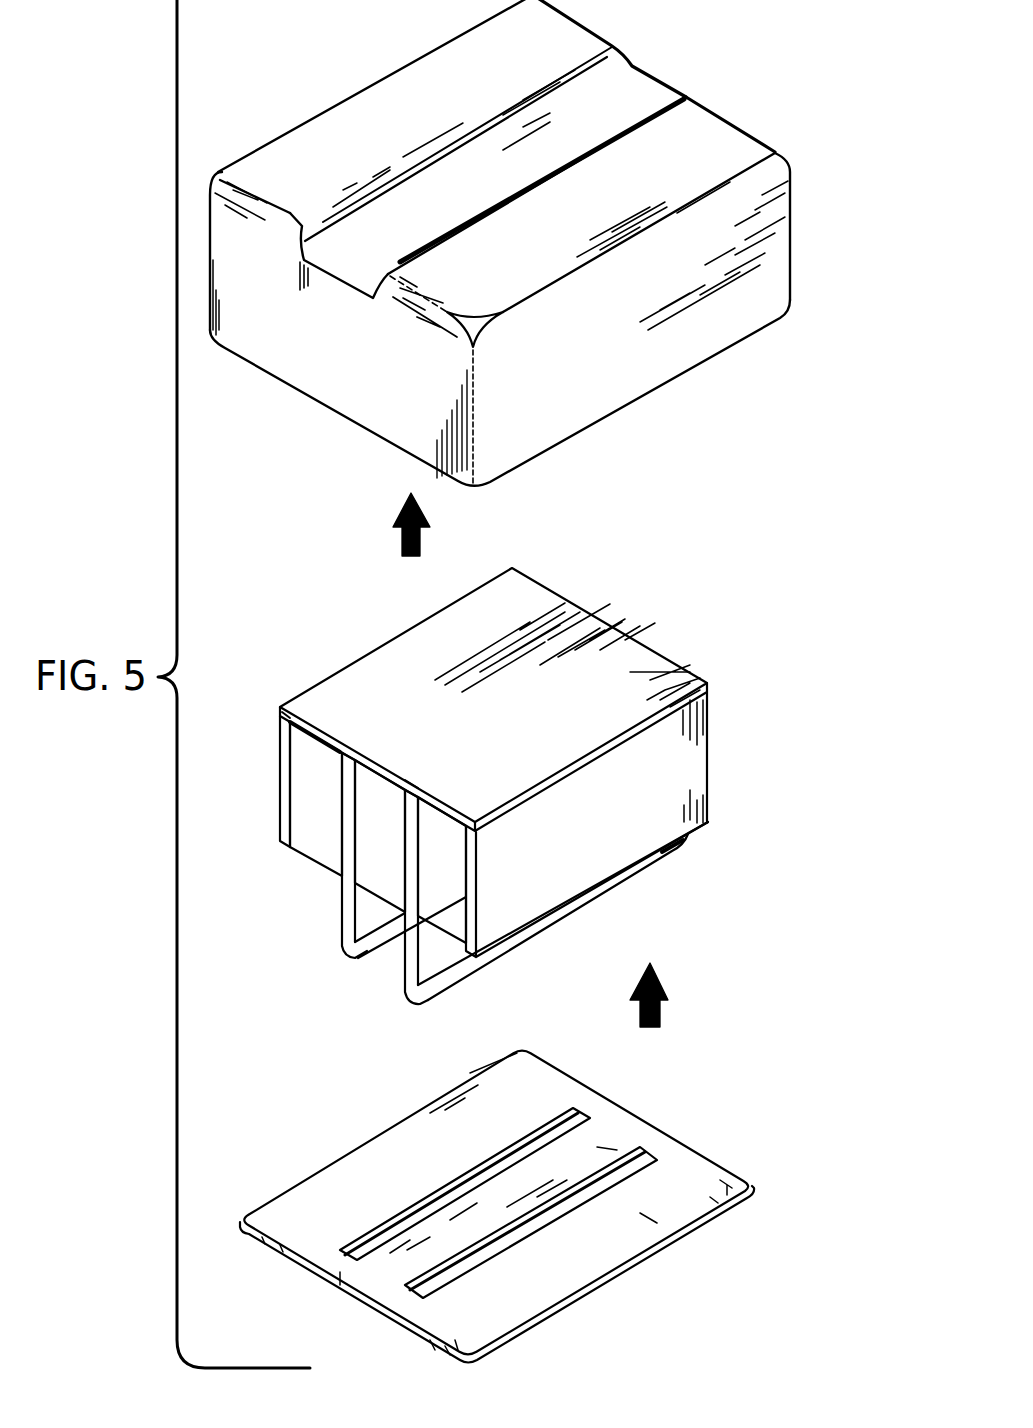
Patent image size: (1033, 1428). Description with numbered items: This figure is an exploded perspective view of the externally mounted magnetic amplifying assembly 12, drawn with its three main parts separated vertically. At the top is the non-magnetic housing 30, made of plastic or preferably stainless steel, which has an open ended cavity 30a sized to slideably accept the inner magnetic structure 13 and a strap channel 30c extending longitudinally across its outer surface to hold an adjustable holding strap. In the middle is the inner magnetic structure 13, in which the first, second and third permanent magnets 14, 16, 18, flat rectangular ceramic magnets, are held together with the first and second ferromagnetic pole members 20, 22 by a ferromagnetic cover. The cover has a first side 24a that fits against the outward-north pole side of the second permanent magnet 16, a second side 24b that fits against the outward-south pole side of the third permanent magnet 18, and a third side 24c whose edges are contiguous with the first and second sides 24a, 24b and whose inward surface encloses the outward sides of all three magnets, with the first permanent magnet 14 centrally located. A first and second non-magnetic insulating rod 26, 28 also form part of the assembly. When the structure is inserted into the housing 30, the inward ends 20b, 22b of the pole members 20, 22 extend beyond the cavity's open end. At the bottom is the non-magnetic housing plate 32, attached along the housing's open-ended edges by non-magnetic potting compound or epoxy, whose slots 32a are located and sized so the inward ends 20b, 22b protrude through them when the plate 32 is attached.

The magnetic amplifying assembly 12 is at (820, 500).
The inner magnetic structure 13 is at (780, 720).
The first permanent magnet 14 is at (383, 880).
The second permanent magnet 16 is at (320, 847).
The third permanent magnet 18 is at (382, 948).
The first ferromagnetic pole member 20 is at (350, 792).
The inward end of first ferromagnetic pole member 20b is at (348, 945).
The second ferromagnetic pole member 22 is at (410, 823).
The inward end of second ferromagnetic pole member 22b is at (440, 978).
The first side of ferromagnetic cover 24a is at (285, 737).
The second side of ferromagnetic cover 24b is at (677, 768).
The third side of ferromagnetic cover 24c is at (632, 660).
The first non-magnetic insulating rod 26 is at (283, 718).
The second non-magnetic insulating rod 28 is at (410, 777).
The non-magnetic housing 30 is at (778, 211).
The open ended cavity 30a is at (307, 403).
The strap channel 30c is at (627, 97).
The non-magnetic housing plate 32 is at (693, 1217).
The slots 32a is at (437, 1200).